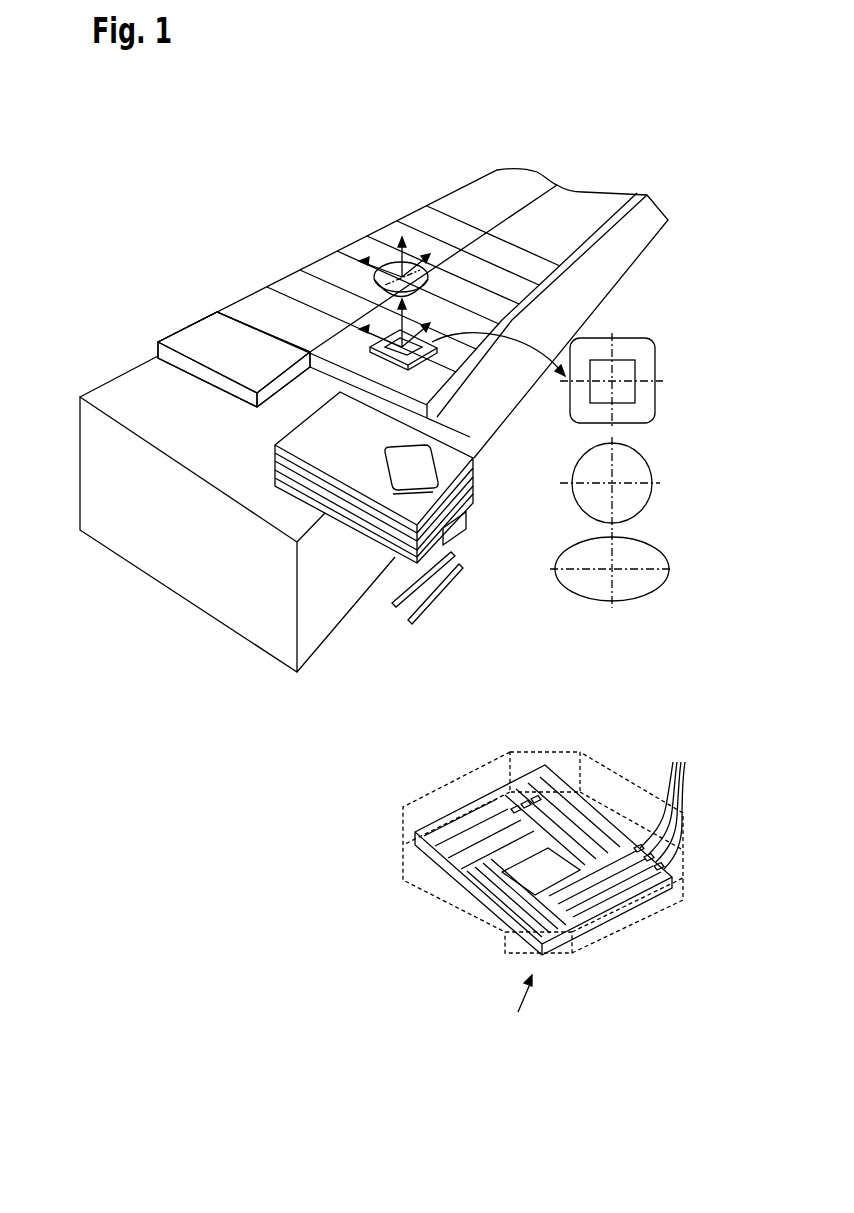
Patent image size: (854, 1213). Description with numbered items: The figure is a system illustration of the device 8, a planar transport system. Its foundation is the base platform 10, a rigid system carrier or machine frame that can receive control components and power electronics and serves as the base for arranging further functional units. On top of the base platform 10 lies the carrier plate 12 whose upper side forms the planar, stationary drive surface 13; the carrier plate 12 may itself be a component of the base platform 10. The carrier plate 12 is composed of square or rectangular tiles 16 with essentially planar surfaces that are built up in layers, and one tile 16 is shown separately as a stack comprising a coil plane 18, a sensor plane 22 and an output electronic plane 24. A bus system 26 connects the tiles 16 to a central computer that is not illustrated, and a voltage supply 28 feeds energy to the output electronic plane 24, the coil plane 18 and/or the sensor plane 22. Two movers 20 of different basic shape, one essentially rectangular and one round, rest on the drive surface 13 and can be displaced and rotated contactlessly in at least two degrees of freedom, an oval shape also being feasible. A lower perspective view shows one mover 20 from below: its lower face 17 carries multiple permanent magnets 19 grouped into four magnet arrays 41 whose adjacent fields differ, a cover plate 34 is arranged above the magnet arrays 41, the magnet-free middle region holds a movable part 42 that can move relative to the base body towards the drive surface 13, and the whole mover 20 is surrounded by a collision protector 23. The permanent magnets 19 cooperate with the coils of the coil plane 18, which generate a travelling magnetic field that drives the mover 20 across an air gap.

The device 8 is at (410, 168).
The base platform 10 is at (152, 390).
The carrier plate 12 is at (258, 317).
The drive surface 13 is at (234, 318).
The tiles 16 is at (510, 303).
The coil plane 18 is at (472, 483).
The mover 20 is at (393, 260).
The sensor plane 22 is at (468, 500).
The output electronic plane 24 is at (468, 526).
The bus system 26 is at (393, 604).
The voltage supply 28 is at (432, 596).
The collision protector 23 is at (400, 814).
The cover plate 34 is at (450, 822).
The magnet arrays 41 is at (590, 822).
The movable part 42 is at (547, 872).
The permanent magnets 19 is at (666, 804).
The lower face 17 is at (514, 1009).